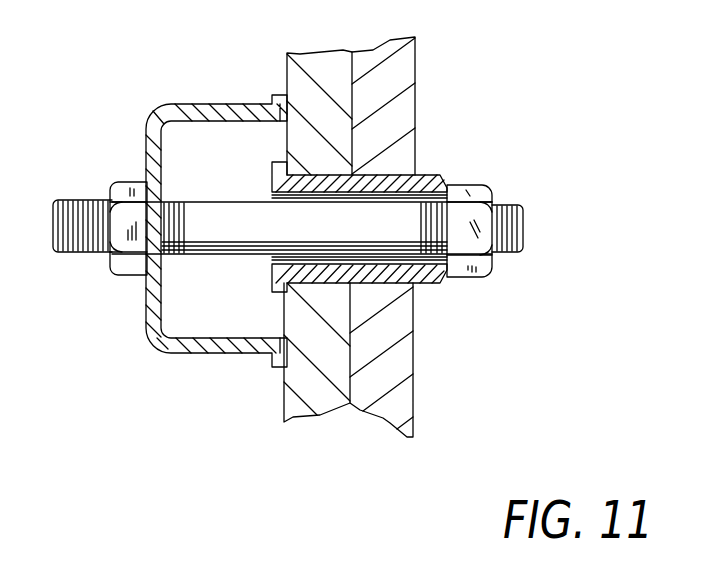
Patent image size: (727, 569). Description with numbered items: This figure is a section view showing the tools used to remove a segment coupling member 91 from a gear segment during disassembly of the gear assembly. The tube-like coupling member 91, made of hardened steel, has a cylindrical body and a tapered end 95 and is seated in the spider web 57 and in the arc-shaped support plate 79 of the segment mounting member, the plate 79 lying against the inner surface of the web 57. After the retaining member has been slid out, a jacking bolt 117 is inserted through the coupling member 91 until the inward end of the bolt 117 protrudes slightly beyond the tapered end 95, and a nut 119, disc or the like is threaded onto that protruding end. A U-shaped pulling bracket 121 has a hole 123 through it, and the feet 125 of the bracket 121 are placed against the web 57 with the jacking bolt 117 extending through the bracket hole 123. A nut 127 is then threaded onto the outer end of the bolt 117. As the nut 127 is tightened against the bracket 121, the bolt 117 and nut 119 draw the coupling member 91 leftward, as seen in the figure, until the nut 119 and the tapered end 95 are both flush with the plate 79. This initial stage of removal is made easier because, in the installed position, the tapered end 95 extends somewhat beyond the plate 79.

The web 57 is at (325, 70).
The support plate 79 is at (398, 75).
The segment coupling member 91 is at (423, 177).
The tapered end 95 is at (427, 283).
The jacking bolt 117 is at (528, 231).
The nut 119 is at (476, 183).
The pulling bracket 121 is at (212, 353).
The bracket hole 123 is at (163, 193).
The feet 125 is at (273, 368).
The nut 127 is at (135, 277).